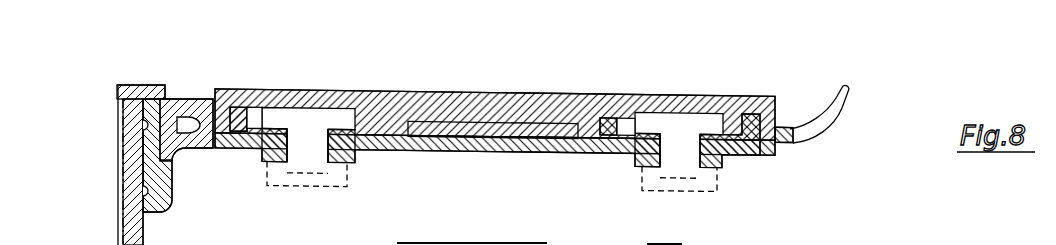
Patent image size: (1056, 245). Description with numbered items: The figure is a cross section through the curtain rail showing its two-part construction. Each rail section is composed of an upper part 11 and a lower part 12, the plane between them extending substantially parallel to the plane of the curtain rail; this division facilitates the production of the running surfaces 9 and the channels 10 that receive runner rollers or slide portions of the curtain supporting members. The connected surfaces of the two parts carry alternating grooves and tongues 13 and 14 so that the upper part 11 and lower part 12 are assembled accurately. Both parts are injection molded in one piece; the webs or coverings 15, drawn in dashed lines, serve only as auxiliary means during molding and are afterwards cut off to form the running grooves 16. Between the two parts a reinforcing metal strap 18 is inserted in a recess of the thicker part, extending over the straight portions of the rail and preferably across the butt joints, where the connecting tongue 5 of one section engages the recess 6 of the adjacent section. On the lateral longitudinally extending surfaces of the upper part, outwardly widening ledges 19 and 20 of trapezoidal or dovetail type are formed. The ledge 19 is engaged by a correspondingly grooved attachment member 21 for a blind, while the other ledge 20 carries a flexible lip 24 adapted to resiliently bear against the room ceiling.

The connecting tongue 5 is at (687, 244).
The recess 6 is at (534, 242).
The running surfaces 9 is at (347, 128).
The channels 10 is at (330, 164).
The upper part 11 is at (457, 90).
The lower part 12 is at (578, 151).
The grooves 13 is at (243, 107).
The tongues 14 is at (250, 108).
The webs or coverings 15 is at (288, 187).
The running grooves 16 is at (292, 152).
The reinforcing metal strap 18 is at (527, 123).
The ledge 19 is at (200, 128).
The ledge 20 is at (790, 130).
The attachment member 21 is at (165, 208).
The flexible lip 24 is at (838, 113).